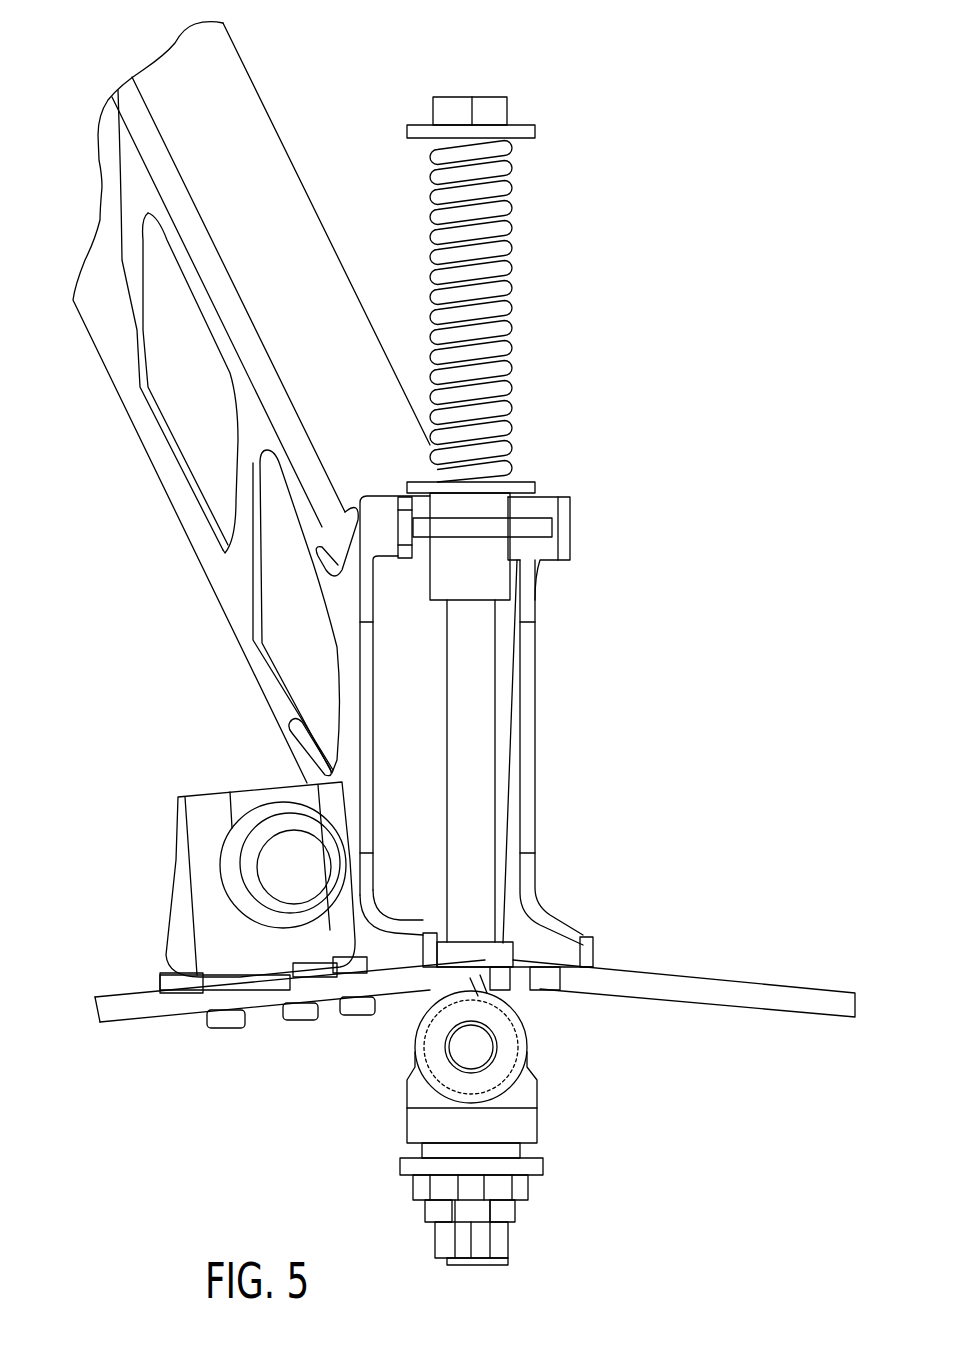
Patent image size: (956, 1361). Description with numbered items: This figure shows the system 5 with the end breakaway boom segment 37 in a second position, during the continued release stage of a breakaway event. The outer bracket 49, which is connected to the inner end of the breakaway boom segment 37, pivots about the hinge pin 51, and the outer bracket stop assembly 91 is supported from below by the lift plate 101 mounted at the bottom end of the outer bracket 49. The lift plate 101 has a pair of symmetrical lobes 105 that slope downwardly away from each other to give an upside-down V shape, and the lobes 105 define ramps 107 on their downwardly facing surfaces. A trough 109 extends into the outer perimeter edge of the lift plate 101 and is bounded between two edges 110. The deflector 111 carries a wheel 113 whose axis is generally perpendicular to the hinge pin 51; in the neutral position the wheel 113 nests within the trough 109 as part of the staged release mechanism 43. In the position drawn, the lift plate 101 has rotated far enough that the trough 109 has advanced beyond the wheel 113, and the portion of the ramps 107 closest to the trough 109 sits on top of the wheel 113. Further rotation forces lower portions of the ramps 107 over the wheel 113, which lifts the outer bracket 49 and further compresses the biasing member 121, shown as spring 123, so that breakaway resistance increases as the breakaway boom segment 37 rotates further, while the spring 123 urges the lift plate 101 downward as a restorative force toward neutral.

The system 5 is at (632, 210).
The breakaway boom segment 37 is at (133, 459).
The staged release mechanism 43 is at (557, 1142).
The outer bracket 49 is at (577, 807).
The hinge pin 51 is at (485, 705).
The outer bracket stop assembly 91 is at (190, 778).
The lift plate 101 is at (740, 940).
The lobes 105 is at (95, 997).
The ramps 107 is at (195, 1018).
The trough 109 is at (518, 977).
The edges 110 is at (580, 975).
The deflector 111 is at (390, 1143).
The wheel 113 is at (500, 1065).
The biasing member 121 is at (413, 163).
The spring 123 is at (430, 258).